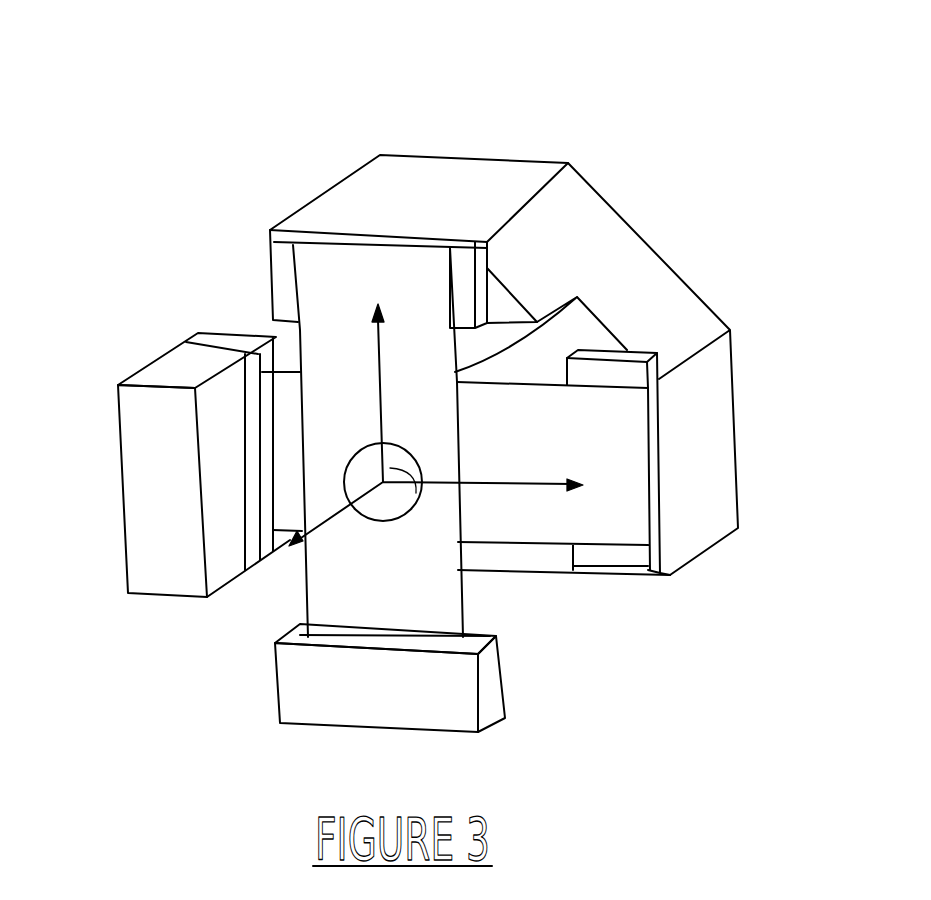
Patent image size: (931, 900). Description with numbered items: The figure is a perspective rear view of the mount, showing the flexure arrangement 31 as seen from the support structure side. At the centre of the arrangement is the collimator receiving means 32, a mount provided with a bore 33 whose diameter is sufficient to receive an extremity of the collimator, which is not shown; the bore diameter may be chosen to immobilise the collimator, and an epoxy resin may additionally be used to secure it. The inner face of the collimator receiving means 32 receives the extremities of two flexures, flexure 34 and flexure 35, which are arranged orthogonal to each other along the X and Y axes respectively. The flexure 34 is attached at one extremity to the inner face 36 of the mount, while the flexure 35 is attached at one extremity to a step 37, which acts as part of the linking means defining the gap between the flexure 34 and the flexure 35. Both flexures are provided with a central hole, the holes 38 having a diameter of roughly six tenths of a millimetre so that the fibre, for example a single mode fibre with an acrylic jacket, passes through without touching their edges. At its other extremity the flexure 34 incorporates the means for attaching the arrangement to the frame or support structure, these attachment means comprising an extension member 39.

The flexure arrangement 31 is at (327, 124).
The collimator receiving means 32 is at (718, 492).
The bore 33 is at (592, 307).
The flexure 34 is at (543, 505).
The flexure 35 is at (320, 363).
The inner face 36 is at (555, 558).
The step 37 is at (522, 283).
The holes 38 is at (353, 502).
The extension member 39 is at (138, 460).